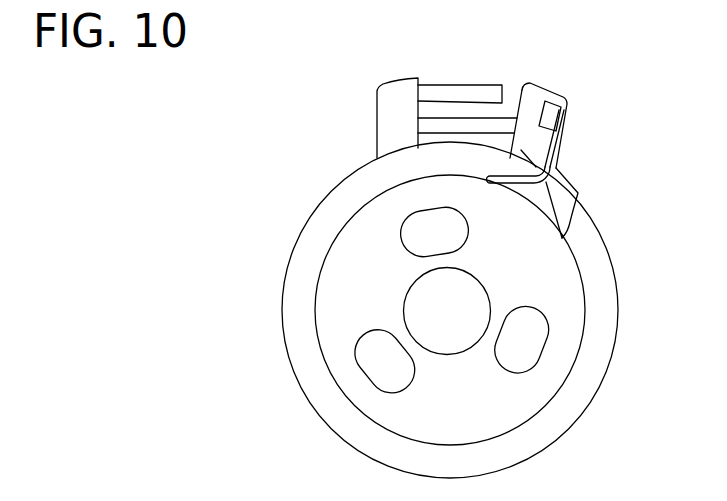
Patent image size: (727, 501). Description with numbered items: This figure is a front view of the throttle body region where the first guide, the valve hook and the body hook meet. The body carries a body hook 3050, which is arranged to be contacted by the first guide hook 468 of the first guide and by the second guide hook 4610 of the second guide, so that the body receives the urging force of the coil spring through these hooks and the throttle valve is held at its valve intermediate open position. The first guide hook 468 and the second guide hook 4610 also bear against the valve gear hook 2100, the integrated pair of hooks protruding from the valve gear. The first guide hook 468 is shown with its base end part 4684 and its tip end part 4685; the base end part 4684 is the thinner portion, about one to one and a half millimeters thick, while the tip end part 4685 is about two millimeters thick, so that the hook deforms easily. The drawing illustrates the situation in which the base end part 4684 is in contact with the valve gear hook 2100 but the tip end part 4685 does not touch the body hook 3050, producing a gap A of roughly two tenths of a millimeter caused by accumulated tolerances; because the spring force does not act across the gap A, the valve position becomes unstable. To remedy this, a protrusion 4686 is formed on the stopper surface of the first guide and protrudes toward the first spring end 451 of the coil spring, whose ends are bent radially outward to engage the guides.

The body hook 3050 is at (452, 90).
The tip end part 4685 is at (523, 96).
The first guide hook 468 is at (540, 100).
The protrusion 4686 is at (548, 125).
The first spring end 451 is at (552, 145).
The base end part 4684 is at (550, 168).
The second guide hook 4610 is at (393, 105).
The valve gear hook 2100 is at (453, 128).
The gap A is at (515, 97).